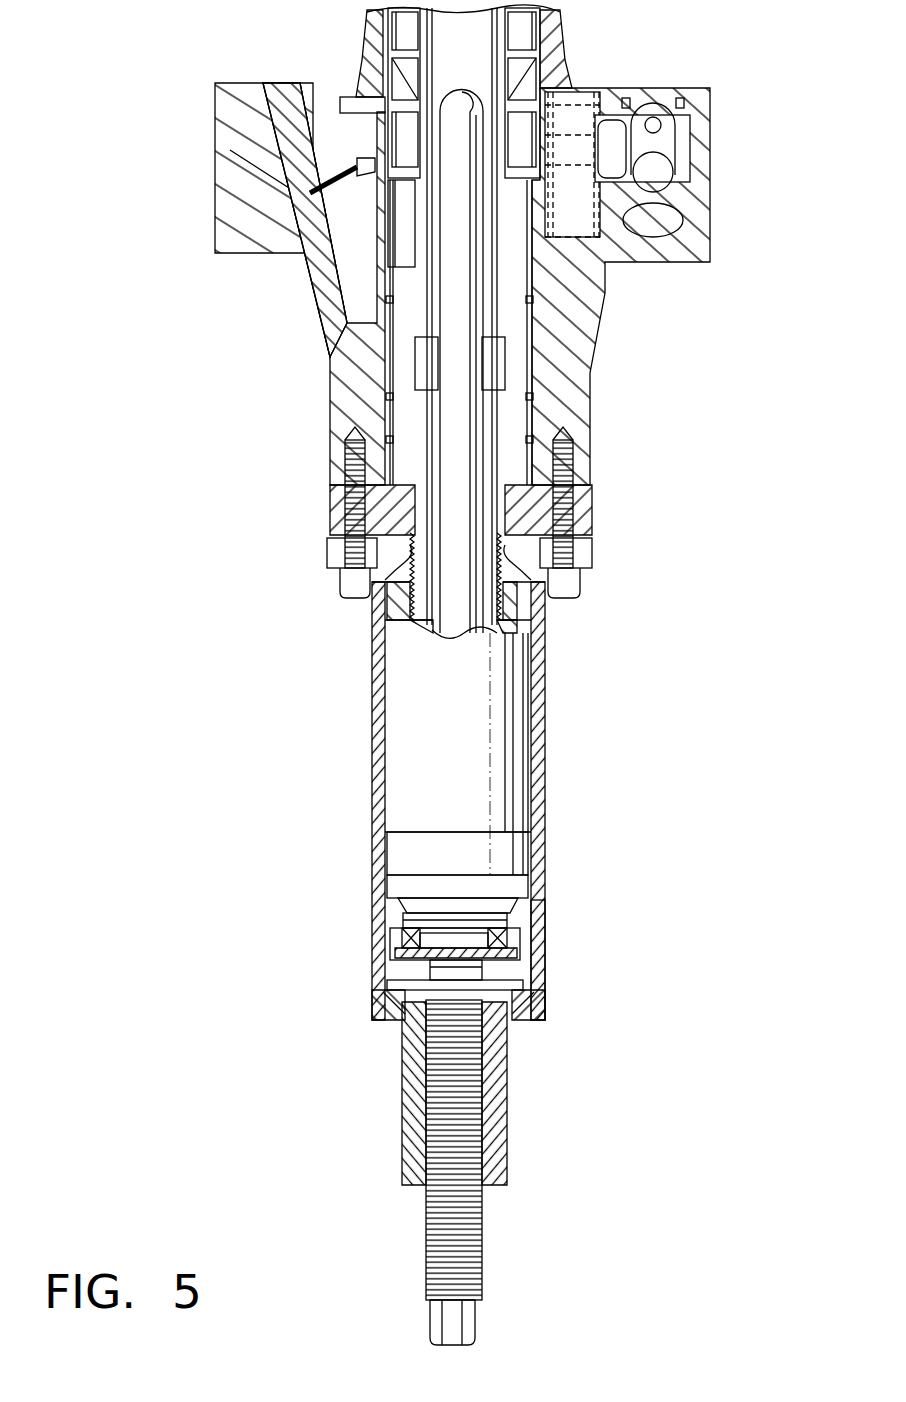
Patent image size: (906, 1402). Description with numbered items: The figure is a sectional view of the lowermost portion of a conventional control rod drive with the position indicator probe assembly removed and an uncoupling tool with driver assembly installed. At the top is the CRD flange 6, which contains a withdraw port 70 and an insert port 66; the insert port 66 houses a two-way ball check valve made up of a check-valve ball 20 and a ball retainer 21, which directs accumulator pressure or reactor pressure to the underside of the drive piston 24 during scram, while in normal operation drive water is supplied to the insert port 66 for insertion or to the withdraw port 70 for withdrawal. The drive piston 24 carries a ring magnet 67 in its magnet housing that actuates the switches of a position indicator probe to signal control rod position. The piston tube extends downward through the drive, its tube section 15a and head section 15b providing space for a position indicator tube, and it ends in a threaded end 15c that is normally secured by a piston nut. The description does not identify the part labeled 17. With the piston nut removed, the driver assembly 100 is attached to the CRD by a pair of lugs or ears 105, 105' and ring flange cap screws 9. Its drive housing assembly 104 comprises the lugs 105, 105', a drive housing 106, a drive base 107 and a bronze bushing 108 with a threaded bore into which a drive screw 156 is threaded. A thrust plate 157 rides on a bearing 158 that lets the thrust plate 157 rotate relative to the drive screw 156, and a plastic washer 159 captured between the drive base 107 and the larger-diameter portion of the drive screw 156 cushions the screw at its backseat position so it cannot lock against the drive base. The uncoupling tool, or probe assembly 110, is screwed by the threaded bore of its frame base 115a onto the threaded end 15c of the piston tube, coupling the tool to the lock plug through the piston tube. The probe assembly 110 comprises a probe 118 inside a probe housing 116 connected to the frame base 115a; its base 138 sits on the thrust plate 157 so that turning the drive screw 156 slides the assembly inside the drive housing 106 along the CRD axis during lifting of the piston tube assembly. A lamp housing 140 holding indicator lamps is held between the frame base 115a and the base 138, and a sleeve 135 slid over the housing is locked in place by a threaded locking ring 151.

The CRD flange 6 is at (215, 242).
The ring flange cap screws 9 is at (350, 585).
The tube section 15a is at (420, 220).
The head section 15b is at (400, 420).
The threaded end 15c is at (545, 648).
The flange 17 is at (330, 500).
The check-valve ball 20 is at (658, 173).
The ball retainer 21 is at (660, 143).
The drive piston 24 is at (385, 62).
The insert port 66 is at (655, 95).
The ring magnet 67 is at (352, 100).
The withdraw port 70 is at (292, 128).
The driver assembly 100 is at (441, 939).
The drive housing assembly 104 is at (545, 948).
The lug 105 is at (607, 548).
The lug 105' is at (306, 538).
The drive housing 106 is at (372, 962).
The drive base 107 is at (517, 1022).
The bronze bushing 108 is at (495, 1142).
The probe assembly 110 is at (418, 735).
The frame base 115a is at (375, 605).
The probe housing 116 is at (483, 422).
The probe 118 is at (462, 92).
The sleeve 135 is at (398, 690).
The base 138 is at (400, 885).
The lamp housing 140 is at (400, 850).
The threaded locking ring 151 is at (535, 600).
The drive screw 156 is at (485, 1275).
The thrust plate 157 is at (505, 918).
The bearing 158 is at (503, 938).
The plastic washer 159 is at (500, 975).